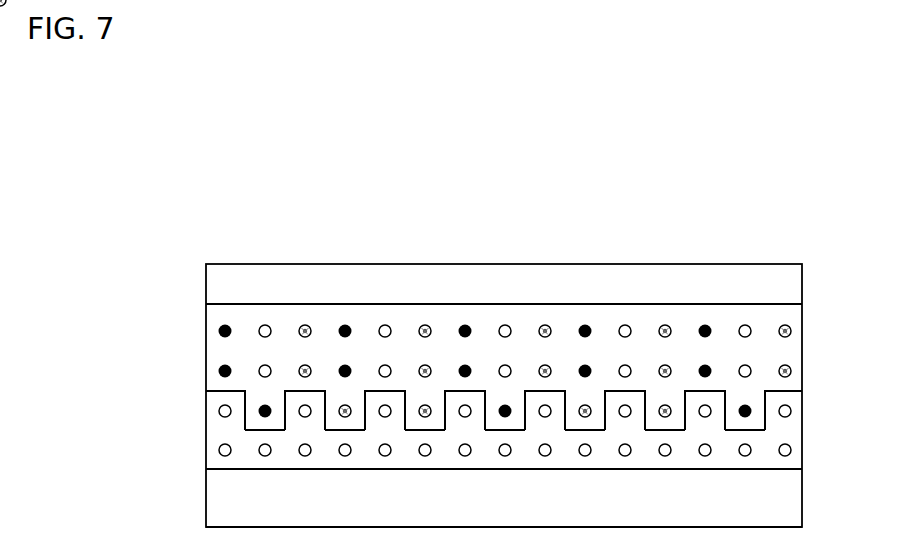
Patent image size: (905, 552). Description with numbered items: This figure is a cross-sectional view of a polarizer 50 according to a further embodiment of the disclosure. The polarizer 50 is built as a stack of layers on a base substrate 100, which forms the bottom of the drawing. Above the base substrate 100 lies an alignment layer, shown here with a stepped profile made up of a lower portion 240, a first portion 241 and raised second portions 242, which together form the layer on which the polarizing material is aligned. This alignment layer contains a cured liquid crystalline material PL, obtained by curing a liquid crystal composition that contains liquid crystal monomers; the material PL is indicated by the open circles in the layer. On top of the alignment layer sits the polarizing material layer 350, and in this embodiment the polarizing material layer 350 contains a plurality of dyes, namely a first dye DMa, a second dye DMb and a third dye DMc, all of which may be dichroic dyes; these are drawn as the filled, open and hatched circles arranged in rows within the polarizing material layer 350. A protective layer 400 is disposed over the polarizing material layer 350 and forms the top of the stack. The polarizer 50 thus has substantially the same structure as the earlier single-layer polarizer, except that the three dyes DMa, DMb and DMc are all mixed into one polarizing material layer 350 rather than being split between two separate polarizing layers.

The polarizer 50 is at (709, 233).
The protective layer 400 is at (792, 291).
The polarizing material layer 350 is at (792, 347).
The second pixel defining portion 242 is at (714, 390).
The first pixel defining portion 241 is at (755, 430).
The pixel defining layer 240 is at (792, 460).
The base substrate 100 is at (792, 498).
The cured liquid crystalline material PL is at (218, 409).
The first dye DMa is at (224, 364).
The second dye DMb is at (264, 364).
The third dye DMc is at (304, 364).